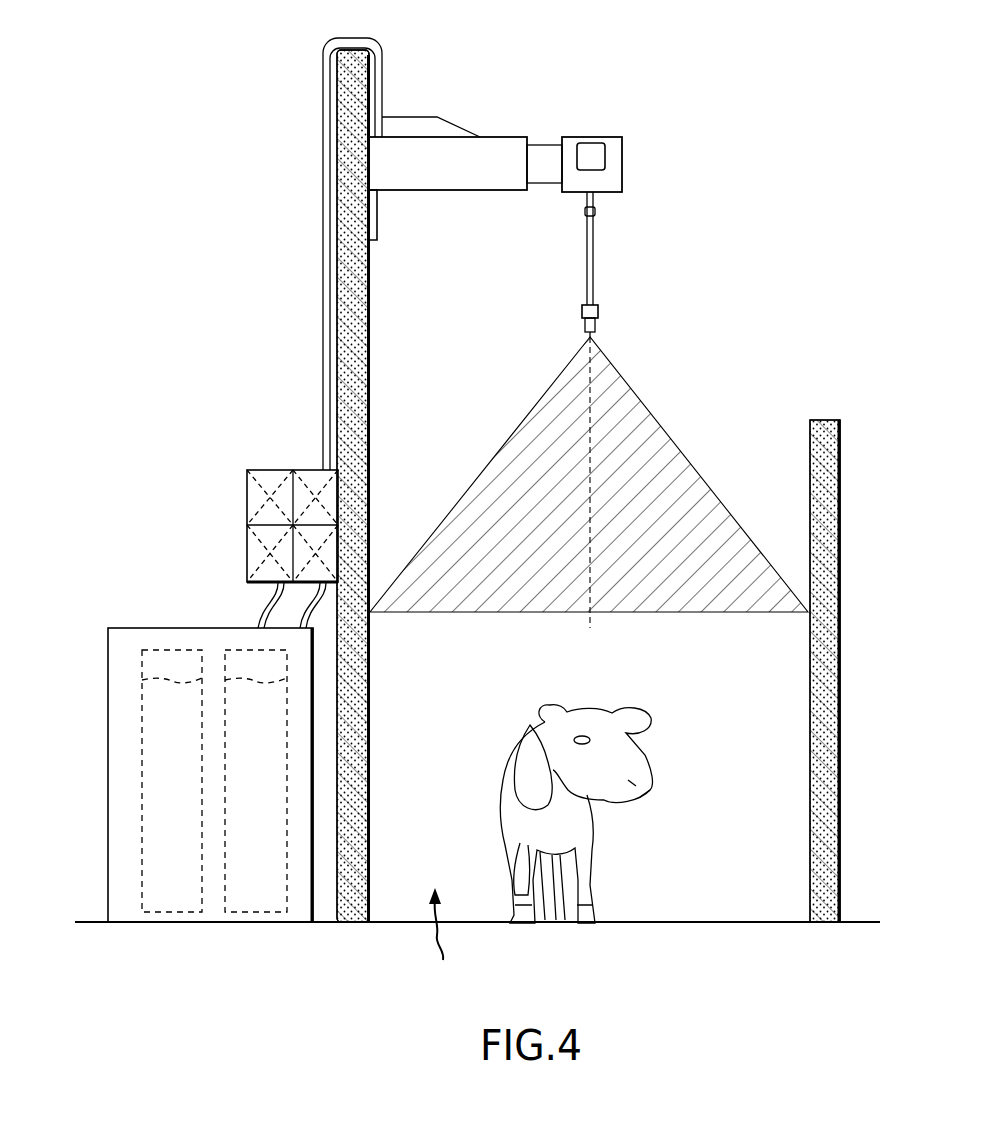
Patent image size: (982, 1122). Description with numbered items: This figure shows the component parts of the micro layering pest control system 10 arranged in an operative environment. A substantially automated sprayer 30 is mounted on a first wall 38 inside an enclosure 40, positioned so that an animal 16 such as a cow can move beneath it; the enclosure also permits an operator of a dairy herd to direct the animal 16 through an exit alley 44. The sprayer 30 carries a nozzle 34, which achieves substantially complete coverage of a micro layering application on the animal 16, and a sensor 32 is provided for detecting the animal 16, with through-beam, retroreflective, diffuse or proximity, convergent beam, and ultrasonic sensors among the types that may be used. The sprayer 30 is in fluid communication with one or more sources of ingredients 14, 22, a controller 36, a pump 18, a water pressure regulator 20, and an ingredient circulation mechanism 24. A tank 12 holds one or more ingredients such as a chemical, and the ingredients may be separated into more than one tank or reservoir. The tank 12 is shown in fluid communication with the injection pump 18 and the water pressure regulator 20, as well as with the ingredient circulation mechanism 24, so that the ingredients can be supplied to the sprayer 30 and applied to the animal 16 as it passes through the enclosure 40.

The micro layering pest control system 10 is at (227, 72).
The tank 12 is at (108, 840).
The source of ingredients 14 is at (148, 763).
The animal 16 is at (500, 768).
The pump 18 is at (247, 555).
The water pressure regulator 20 is at (265, 589).
The source of ingredients 22 is at (265, 916).
The ingredient circulation mechanism 24 is at (318, 478).
The substantially automated sprayer 30 is at (622, 168).
The sensor 32 is at (590, 155).
The nozzle 34 is at (597, 312).
The controller 36 is at (268, 470).
The first wall 38 is at (367, 96).
The enclosure 40 is at (675, 907).
The exit alley 44 is at (445, 939).